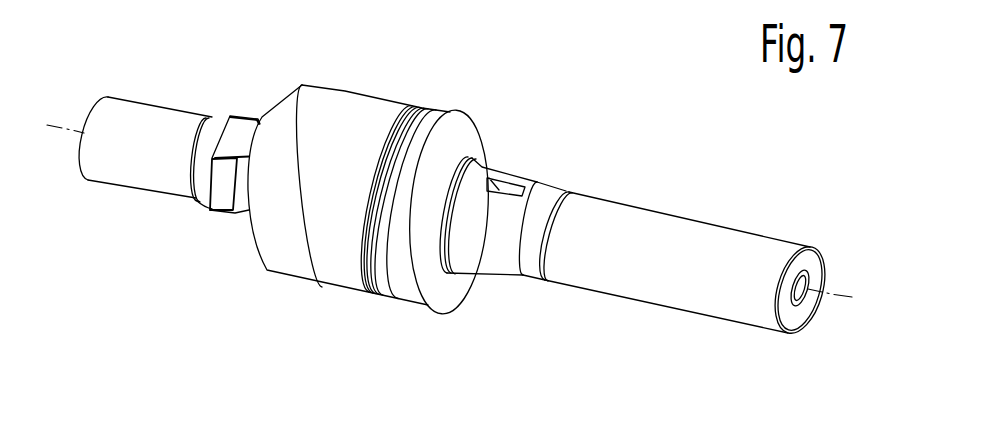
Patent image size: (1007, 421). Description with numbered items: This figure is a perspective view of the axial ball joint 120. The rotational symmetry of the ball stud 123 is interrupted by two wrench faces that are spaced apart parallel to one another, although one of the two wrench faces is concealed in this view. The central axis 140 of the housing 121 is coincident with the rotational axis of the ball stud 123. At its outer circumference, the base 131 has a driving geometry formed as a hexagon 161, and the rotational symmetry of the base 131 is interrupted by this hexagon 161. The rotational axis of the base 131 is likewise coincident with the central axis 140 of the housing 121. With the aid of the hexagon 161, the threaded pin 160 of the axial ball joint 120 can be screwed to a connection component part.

The axial ball joint 120 is at (537, 128).
The housing 121 is at (393, 93).
The ball stud 123 is at (683, 205).
The base 131 is at (201, 206).
The central axis 140 is at (844, 297).
The threaded pin 160 is at (121, 164).
The hexagon 161 is at (237, 112).